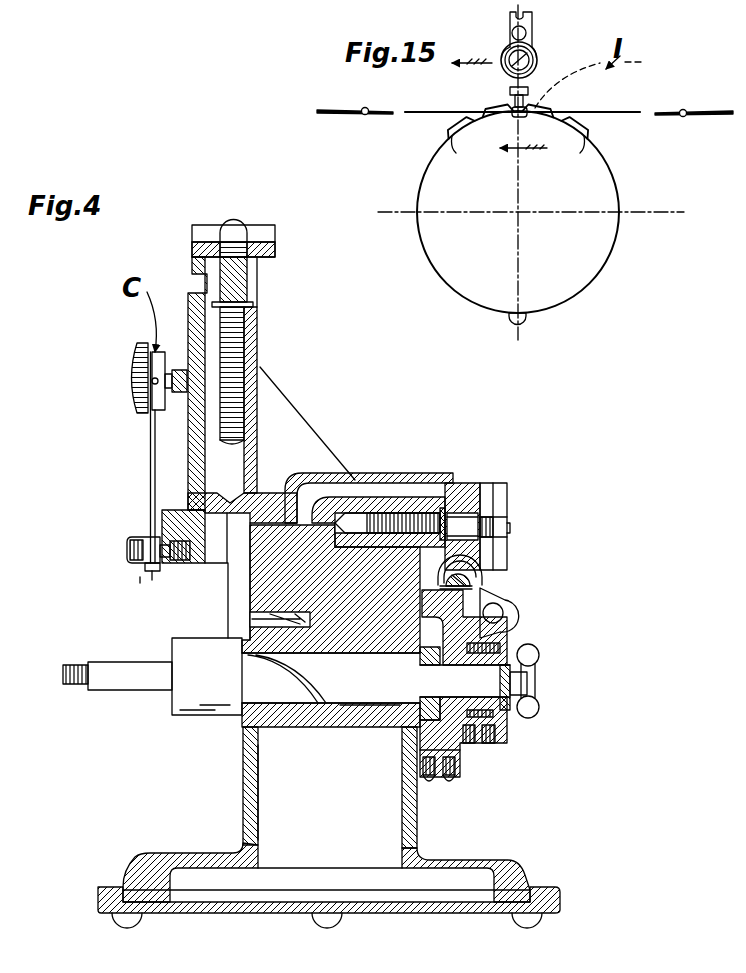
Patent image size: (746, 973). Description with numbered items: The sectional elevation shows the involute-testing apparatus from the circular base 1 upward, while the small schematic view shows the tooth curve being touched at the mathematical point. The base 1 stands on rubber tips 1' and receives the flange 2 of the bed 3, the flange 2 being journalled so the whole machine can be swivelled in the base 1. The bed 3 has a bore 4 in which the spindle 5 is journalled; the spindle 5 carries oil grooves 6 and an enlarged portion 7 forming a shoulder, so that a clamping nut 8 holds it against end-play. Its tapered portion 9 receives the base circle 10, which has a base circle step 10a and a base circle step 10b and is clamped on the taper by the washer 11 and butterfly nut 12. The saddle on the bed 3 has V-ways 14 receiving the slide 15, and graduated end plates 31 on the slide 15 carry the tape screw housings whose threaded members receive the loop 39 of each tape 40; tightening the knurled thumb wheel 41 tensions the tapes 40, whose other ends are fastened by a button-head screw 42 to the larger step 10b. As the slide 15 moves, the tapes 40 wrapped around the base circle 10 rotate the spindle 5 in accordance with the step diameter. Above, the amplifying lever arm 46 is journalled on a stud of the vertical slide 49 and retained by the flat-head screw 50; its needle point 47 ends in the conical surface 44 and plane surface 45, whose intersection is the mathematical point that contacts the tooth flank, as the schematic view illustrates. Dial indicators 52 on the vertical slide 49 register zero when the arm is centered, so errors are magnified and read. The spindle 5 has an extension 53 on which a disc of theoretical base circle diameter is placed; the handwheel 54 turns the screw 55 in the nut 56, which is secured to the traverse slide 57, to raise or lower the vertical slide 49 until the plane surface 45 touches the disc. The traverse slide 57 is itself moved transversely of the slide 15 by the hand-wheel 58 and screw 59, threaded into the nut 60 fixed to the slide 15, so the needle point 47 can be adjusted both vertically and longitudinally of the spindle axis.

In FIG. 4, the base 1 is at (351, 896).
In FIG. 4, the rubber tips 1' is at (344, 939).
In FIG. 4, the flange 2 is at (510, 873).
In FIG. 4, the bed 3 is at (402, 815).
In FIG. 4, the bore 4 is at (317, 727).
In FIG. 4, the spindle 5 is at (343, 722).
In FIG. 4, the oil grooves 6 is at (352, 663).
In FIG. 4, the enlarged portion 7 is at (225, 693).
In FIG. 4, the clamping nut 8 is at (427, 657).
In FIG. 4, the tapered portion 9 is at (474, 684).
In FIG. 15, the base circle 10 is at (592, 255).
In FIG. 4, the base circle 10 is at (494, 643).
In FIG. 4, the base circle step 10a is at (477, 747).
In FIG. 4, the base circle step 10b is at (454, 774).
In FIG. 4, the washer 11 is at (508, 707).
In FIG. 4, the butterfly nut 12 is at (532, 706).
In FIG. 4, the V-ways 14 is at (267, 620).
In FIG. 4, the slide 15 is at (267, 585).
In FIG. 4, the graduated end plates 31 is at (508, 607).
In FIG. 15, the loop 39 is at (339, 108).
In FIG. 15, the tape 40 is at (426, 110).
In FIG. 4, the knurled thumb wheel 41 is at (484, 580).
In FIG. 15, the button-head screw 42 is at (527, 318).
In FIG. 4, the button-head screw 42 is at (431, 789).
In FIG. 4, the conical surface 44 is at (138, 580).
In FIG. 4, the plane surface 45 is at (151, 583).
In FIG. 15, the amplifying lever arm 46 is at (528, 34).
In FIG. 4, the amplifying lever arm 46 is at (151, 462).
In FIG. 15, the needle point 47 is at (511, 101).
In FIG. 4, the needle point 47 is at (157, 569).
In FIG. 4, the vertical slide 49 is at (193, 437).
In FIG. 15, the flat-head screw 50 is at (537, 60).
In FIG. 4, the flat-head screw 50 is at (127, 549).
In FIG. 4, the dial indicators 52 is at (133, 372).
In FIG. 4, the extension 53 is at (120, 675).
In FIG. 4, the handwheel 54 is at (277, 257).
In FIG. 4, the screw 55 is at (243, 329).
In FIG. 4, the nut 56 is at (247, 367).
In FIG. 4, the traverse slide 57 is at (300, 477).
In FIG. 4, the hand-wheel 58 is at (500, 485).
In FIG. 4, the screw 59 is at (441, 508).
In FIG. 4, the nut 60 is at (400, 511).